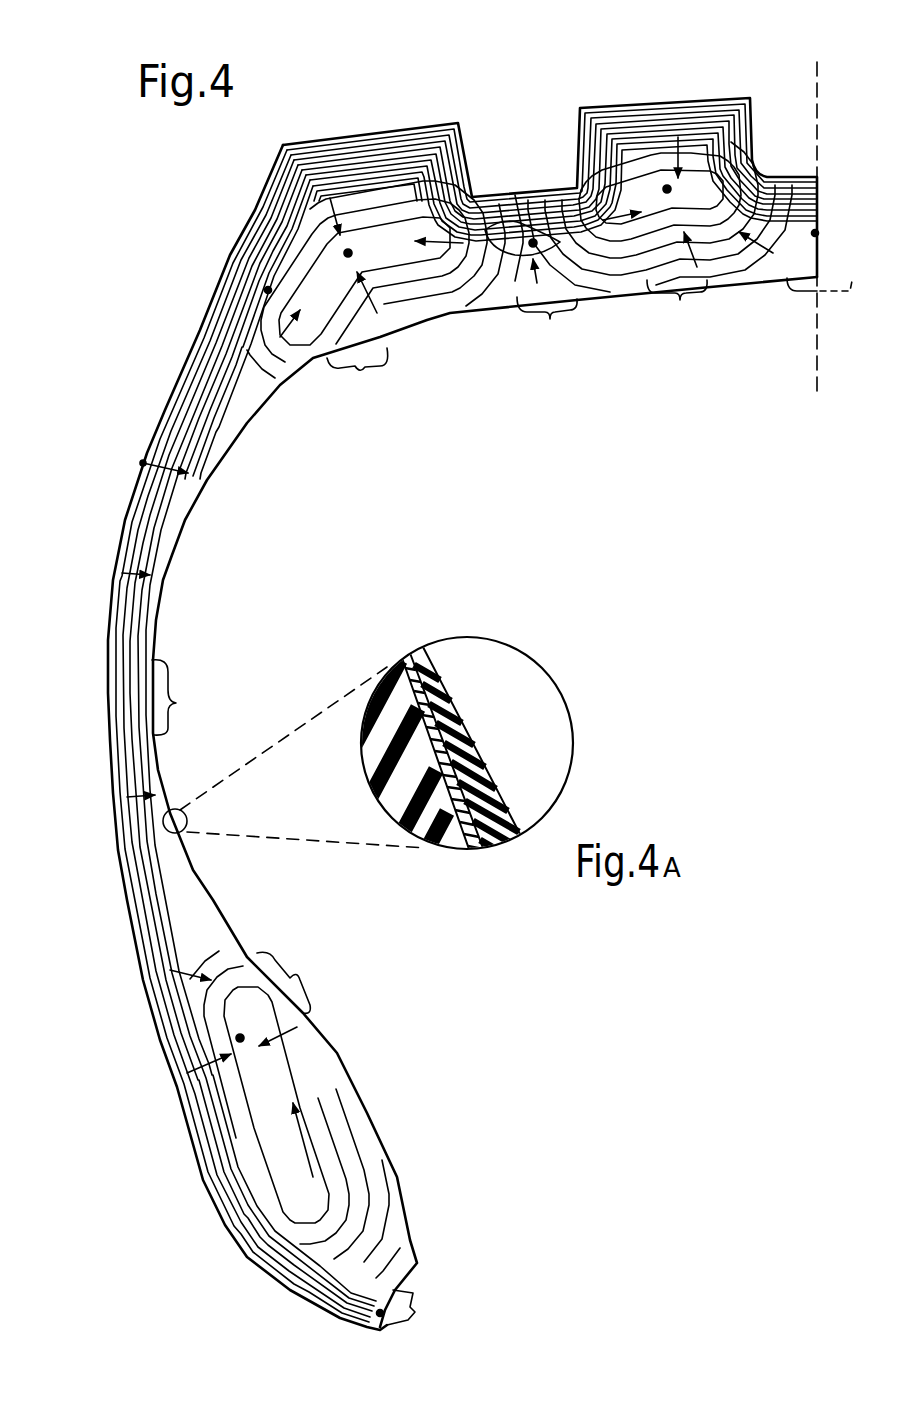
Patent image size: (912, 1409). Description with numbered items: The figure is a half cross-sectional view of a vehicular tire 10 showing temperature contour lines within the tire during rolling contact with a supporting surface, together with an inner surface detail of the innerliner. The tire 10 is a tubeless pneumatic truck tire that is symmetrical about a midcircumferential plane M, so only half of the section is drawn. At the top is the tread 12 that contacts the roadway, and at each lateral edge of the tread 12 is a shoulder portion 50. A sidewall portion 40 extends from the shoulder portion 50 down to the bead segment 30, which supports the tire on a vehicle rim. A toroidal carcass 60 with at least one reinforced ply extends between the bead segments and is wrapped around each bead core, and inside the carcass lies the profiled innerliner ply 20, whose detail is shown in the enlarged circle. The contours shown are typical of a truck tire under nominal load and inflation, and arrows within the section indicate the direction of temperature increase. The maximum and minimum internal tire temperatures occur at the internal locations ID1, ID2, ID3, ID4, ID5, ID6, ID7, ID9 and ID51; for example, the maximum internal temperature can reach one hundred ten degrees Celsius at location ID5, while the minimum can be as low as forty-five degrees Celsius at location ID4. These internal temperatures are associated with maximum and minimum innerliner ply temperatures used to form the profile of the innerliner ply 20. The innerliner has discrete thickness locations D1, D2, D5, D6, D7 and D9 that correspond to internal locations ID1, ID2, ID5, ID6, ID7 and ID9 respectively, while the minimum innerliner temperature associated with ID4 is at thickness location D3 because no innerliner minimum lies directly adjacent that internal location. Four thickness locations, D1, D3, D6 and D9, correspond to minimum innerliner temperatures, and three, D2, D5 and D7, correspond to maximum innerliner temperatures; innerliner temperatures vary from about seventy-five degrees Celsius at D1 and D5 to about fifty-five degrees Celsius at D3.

In FIG. 4, the vehicular tire 10 is at (707, 74).
In FIG. 4, the tread 12 is at (390, 173).
In FIG. 4, the profiled innerliner ply 20 is at (260, 436).
In FIG. 4A, the profiled innerliner ply 20 is at (451, 731).
In FIG. 4, the bead segments 30 is at (180, 1118).
In FIG. 4, the sidewall portion 40 is at (104, 620).
In FIG. 4, the shoulder portion 50 is at (208, 298).
In FIG. 4A, the toroidal carcass 60 is at (433, 797).
In FIG. 4, the midcircumferential plane M is at (818, 317).
In FIG. 4, the internal tire temperature location ID1 is at (380, 1313).
In FIG. 4, the internal tire temperature location ID2 is at (240, 1038).
In FIG. 4, the internal tire temperature location ID3 is at (112, 688).
In FIG. 4, the minimum internal tire temperature location ID4 is at (143, 463).
In FIG. 4, the maximum internal tire temperature location ID5 is at (348, 253).
In FIG. 4, the internal tire temperature location ID51 is at (268, 290).
In FIG. 4, the internal tire temperature location ID6 is at (533, 243).
In FIG. 4, the internal tire temperature location ID7 is at (667, 189).
In FIG. 4, the internal tire temperature location ID9 is at (815, 233).
In FIG. 4, the discrete thickness location D1 is at (418, 1307).
In FIG. 4, the discrete thickness location D2 is at (292, 974).
In FIG. 4, the discrete thickness location D3 is at (185, 697).
In FIG. 4, the discrete thickness location D5 is at (360, 372).
In FIG. 4, the discrete thickness location D6 is at (547, 322).
In FIG. 4, the discrete thickness location D7 is at (686, 307).
In FIG. 4, the discrete thickness location D9 is at (817, 304).